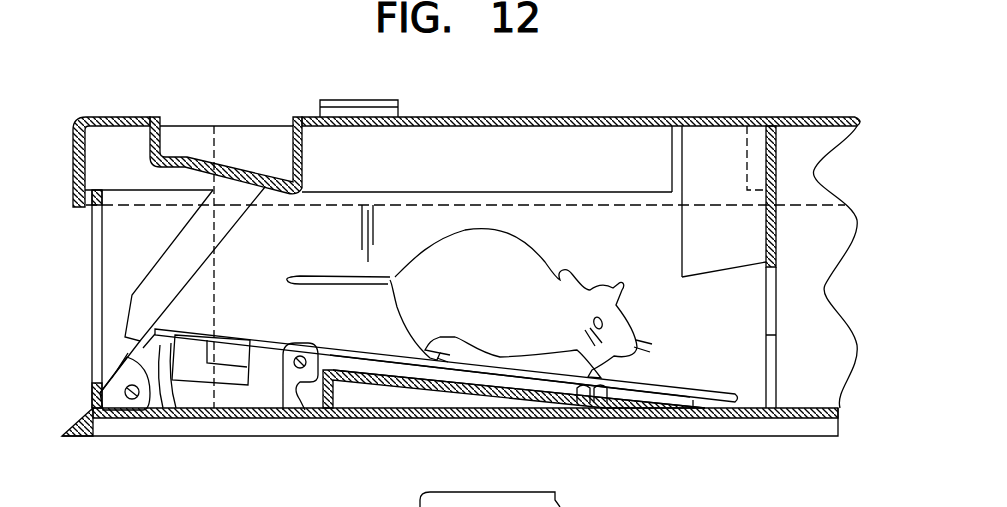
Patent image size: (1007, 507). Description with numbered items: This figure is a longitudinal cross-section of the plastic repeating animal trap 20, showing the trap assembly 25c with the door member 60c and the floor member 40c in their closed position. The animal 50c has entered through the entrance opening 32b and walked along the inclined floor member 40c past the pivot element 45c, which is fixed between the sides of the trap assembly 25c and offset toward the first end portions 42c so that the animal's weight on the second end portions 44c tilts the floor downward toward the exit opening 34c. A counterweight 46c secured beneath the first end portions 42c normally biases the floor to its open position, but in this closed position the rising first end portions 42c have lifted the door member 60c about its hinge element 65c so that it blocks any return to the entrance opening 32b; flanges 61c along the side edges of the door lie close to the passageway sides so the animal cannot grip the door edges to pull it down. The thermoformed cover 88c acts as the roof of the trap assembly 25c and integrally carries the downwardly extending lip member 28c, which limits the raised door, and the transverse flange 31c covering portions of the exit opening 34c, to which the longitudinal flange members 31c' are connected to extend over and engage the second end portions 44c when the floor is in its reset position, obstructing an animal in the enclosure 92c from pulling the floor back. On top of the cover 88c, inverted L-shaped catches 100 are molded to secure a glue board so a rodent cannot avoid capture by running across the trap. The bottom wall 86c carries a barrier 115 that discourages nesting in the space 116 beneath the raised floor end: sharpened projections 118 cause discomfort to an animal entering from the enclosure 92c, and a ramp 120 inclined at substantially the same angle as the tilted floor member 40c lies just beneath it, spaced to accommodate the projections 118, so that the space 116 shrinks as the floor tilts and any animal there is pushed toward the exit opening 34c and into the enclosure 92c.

The repeating animal trap 20 is at (468, 251).
The trap assembly 25c is at (143, 102).
The lip member 28c is at (204, 156).
The cover 88c is at (504, 116).
The inverted L-shaped catches 100 is at (360, 100).
The animal 50c is at (504, 262).
The door member 60c is at (197, 241).
The flanges 61c is at (158, 273).
The entrance opening 32b is at (132, 305).
The floor member 40c is at (362, 347).
The first end portions 42c is at (162, 452).
The counterweight 46c is at (189, 370).
The pivot element 45c is at (306, 387).
The hinge element 65c is at (124, 398).
The second end portions 44c is at (693, 418).
The bottom wall 86c is at (803, 408).
The enclosure 92c is at (827, 343).
The transverse flange 31c is at (792, 196).
The longitudinal flange members 31c' is at (724, 201).
The exit opening 34c is at (797, 312).
The barrier 115 is at (434, 429).
The space 116 is at (498, 384).
The sharpened projections 118 is at (628, 404).
The ramp 120 is at (537, 408).